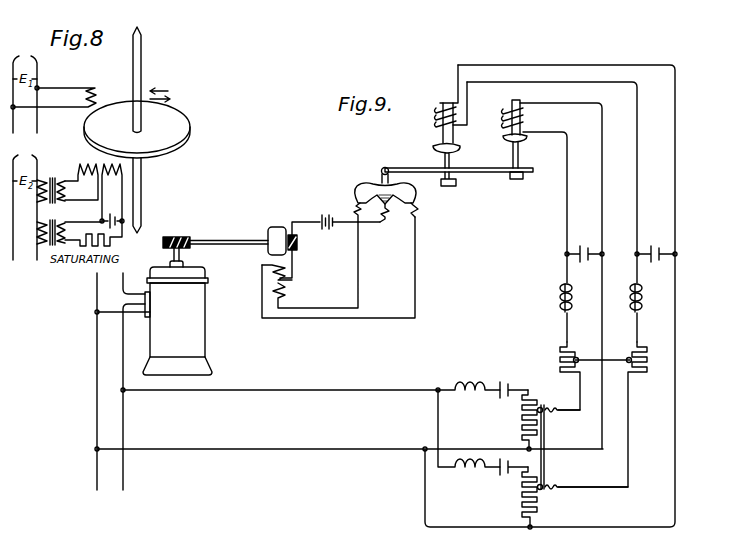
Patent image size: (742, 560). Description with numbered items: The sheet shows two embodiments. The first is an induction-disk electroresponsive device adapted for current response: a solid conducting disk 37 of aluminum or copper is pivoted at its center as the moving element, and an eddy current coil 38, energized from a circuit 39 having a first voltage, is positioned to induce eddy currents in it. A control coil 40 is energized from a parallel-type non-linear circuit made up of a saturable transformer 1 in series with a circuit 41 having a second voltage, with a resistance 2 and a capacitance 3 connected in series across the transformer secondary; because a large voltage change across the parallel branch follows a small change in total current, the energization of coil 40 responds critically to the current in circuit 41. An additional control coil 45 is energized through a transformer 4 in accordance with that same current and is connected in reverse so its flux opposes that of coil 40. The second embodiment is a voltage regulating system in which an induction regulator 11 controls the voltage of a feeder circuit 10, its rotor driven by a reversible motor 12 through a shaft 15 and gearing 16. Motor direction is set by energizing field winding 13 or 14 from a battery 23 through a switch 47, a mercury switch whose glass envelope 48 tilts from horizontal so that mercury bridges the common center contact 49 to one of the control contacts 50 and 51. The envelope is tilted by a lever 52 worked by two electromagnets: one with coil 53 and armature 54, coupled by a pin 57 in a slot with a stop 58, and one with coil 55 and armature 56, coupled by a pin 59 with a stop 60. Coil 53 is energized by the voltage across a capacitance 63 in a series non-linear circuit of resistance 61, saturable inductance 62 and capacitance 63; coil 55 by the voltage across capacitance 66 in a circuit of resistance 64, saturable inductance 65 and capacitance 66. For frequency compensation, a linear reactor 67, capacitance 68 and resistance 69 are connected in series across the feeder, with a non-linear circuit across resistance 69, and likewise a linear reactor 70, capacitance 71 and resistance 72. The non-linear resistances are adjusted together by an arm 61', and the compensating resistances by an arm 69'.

In FIG. 8, the saturable transformer 1 is at (56, 221).
In FIG. 8, the resistance 2 is at (81, 245).
In FIG. 8, the capacitance 3 is at (111, 214).
In FIG. 8, the transformer 4 is at (51, 176).
In FIG. 9, the feeder circuit 10 is at (122, 292).
In FIG. 9, the induction regulator 11 is at (205, 319).
In FIG. 9, the reversible motor 12 is at (281, 226).
In FIG. 9, the field winding 13 is at (268, 270).
In FIG. 9, the field winding 14 is at (268, 290).
In FIG. 9, the shaft 15 is at (233, 239).
In FIG. 9, the gearing 16 is at (177, 237).
In FIG. 9, the battery 23 is at (323, 214).
In FIG. 8, the conducting disk 37 is at (178, 113).
In FIG. 8, the eddy current coil 38 is at (59, 89).
In FIG. 8, the circuit 39 is at (25, 89).
In FIG. 8, the control coil 40 is at (112, 192).
In FIG. 8, the circuit 41 is at (25, 201).
In FIG. 8, the additional control coil 45 is at (80, 166).
In FIG. 9, the switch 47 is at (384, 161).
In FIG. 9, the glass envelope 48 is at (361, 185).
In FIG. 9, the center contact 49 is at (387, 215).
In FIG. 9, the control contact 50 is at (417, 207).
In FIG. 9, the control contact 51 is at (357, 205).
In FIG. 9, the lever 52 is at (418, 167).
In FIG. 9, the coil 53 is at (440, 103).
In FIG. 9, the armature 54 is at (455, 138).
In FIG. 9, the coil 55 is at (527, 119).
In FIG. 9, the armature 56 is at (528, 140).
In FIG. 9, the pin 57 is at (452, 160).
In FIG. 9, the stop 58 is at (449, 186).
In FIG. 9, the pin 59 is at (520, 156).
In FIG. 9, the stop 60 is at (517, 180).
In FIG. 9, the resistance 61 is at (613, 413).
In FIG. 9, the arm 61' is at (603, 343).
In FIG. 9, the saturable inductance 62 is at (643, 299).
In FIG. 9, the capacitance 63 is at (654, 247).
In FIG. 9, the resistance 64 is at (576, 348).
In FIG. 9, the saturable inductance 65 is at (573, 299).
In FIG. 9, the capacitance 66 is at (583, 247).
In FIG. 9, the linear reactor 67 is at (468, 475).
In FIG. 9, the capacitance 68 is at (501, 476).
In FIG. 9, the resistance 69 is at (544, 498).
In FIG. 9, the arm 69' is at (583, 447).
In FIG. 9, the linear reactor 70 is at (469, 395).
In FIG. 9, the capacitance 71 is at (500, 399).
In FIG. 9, the resistance 72 is at (520, 430).